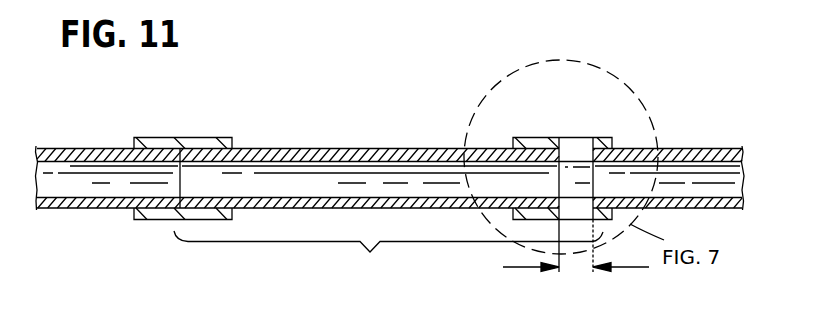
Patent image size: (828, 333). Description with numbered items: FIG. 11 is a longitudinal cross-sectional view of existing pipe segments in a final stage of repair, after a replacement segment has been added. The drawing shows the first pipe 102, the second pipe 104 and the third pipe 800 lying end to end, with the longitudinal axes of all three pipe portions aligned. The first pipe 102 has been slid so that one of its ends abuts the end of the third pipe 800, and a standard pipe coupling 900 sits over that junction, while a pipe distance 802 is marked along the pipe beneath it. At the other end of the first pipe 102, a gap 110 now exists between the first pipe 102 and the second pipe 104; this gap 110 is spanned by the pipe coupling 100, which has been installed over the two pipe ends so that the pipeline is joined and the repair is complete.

The pipe coupling 100 is at (569, 138).
The first pipe 102 is at (494, 148).
The second pipe 104 is at (687, 149).
The gap 110 is at (521, 269).
The third pipe 800 is at (46, 211).
The pipe distance 802 is at (388, 260).
The standard pipe coupling 900 is at (157, 136).